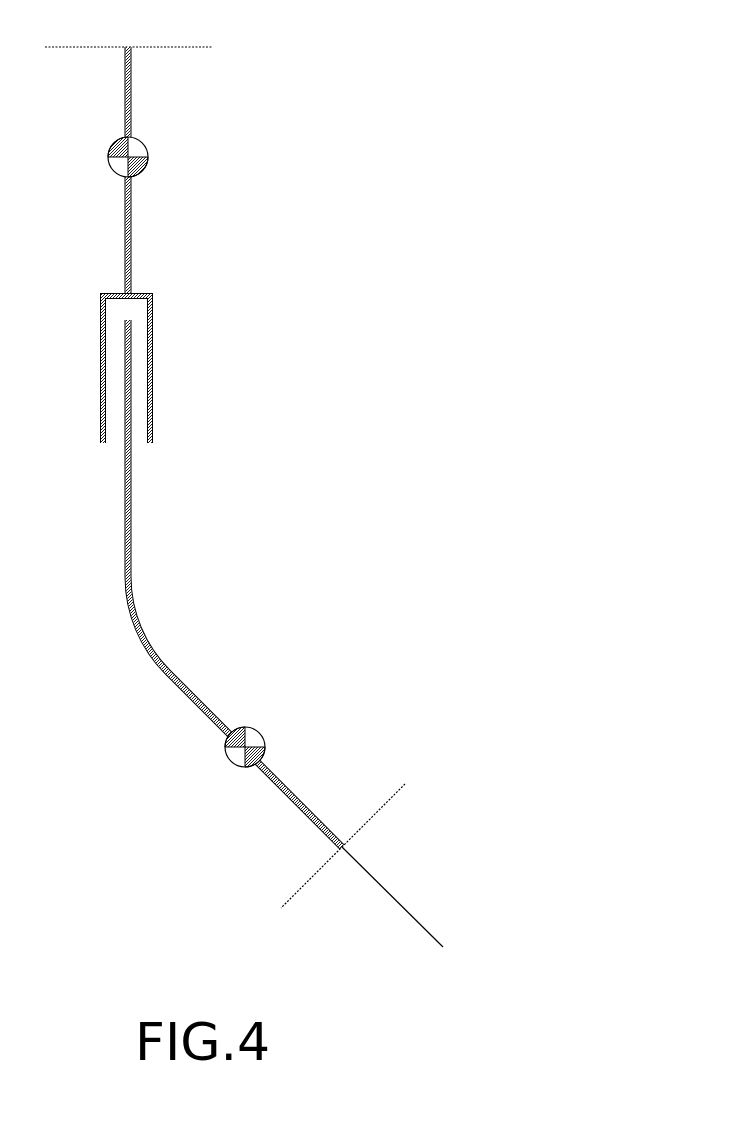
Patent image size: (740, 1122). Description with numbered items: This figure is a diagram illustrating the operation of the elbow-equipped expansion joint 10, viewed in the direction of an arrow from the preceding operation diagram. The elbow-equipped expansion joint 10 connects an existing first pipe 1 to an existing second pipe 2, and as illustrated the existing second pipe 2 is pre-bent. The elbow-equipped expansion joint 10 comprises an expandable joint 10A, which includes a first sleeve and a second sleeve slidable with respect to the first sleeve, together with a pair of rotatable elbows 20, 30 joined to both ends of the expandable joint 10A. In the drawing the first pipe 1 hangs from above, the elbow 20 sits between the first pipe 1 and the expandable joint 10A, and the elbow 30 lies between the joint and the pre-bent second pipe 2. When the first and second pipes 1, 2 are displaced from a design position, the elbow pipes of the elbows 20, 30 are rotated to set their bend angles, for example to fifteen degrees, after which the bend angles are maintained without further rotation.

The first pipe 1 is at (124, 91).
The rotatable elbow 20 is at (148, 164).
The expandable joint 10A is at (155, 369).
The elbow-equipped expansion joint 10 is at (234, 562).
The rotatable elbow 30 is at (230, 762).
The second pipe 2 is at (307, 800).